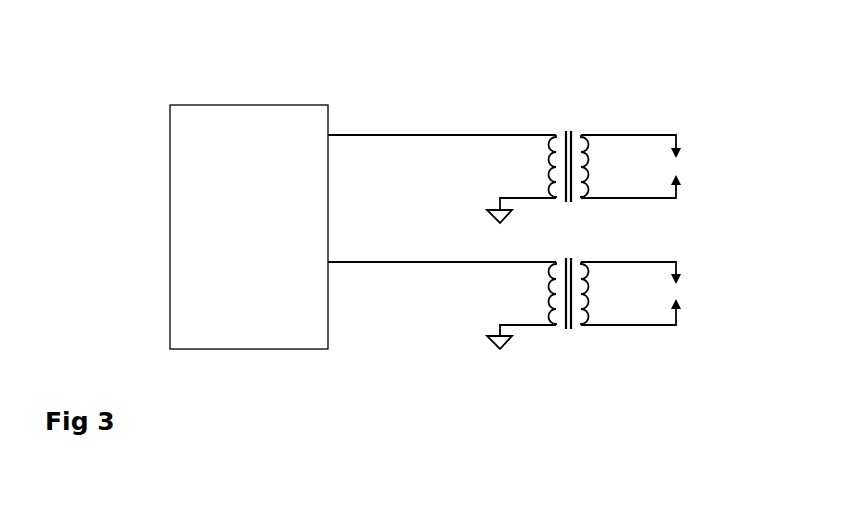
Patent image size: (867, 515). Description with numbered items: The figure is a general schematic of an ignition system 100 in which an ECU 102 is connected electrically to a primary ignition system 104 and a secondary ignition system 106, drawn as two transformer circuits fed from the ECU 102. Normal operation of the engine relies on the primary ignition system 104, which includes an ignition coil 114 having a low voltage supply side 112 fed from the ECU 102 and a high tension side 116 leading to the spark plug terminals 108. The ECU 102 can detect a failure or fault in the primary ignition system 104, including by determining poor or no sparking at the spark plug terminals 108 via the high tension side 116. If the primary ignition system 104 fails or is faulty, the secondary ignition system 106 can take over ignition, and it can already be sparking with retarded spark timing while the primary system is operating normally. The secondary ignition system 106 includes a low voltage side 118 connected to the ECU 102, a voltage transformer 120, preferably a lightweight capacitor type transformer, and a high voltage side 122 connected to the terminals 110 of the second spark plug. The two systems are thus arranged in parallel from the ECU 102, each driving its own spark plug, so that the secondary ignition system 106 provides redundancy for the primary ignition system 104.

The ignition system 100 is at (353, 113).
The ECU 102 is at (249, 227).
The primary ignition system 104 is at (441, 112).
The secondary ignition system 106 is at (443, 343).
The spark plug terminals 108 is at (680, 168).
The terminals of the second spark plug 110 is at (680, 288).
The low voltage supply side 112 is at (550, 138).
The ignition coil 114 is at (563, 137).
The high tension side 116 is at (578, 138).
The low voltage side 118 is at (543, 325).
The voltage transformer 120 is at (567, 324).
The high voltage side 122 is at (578, 323).